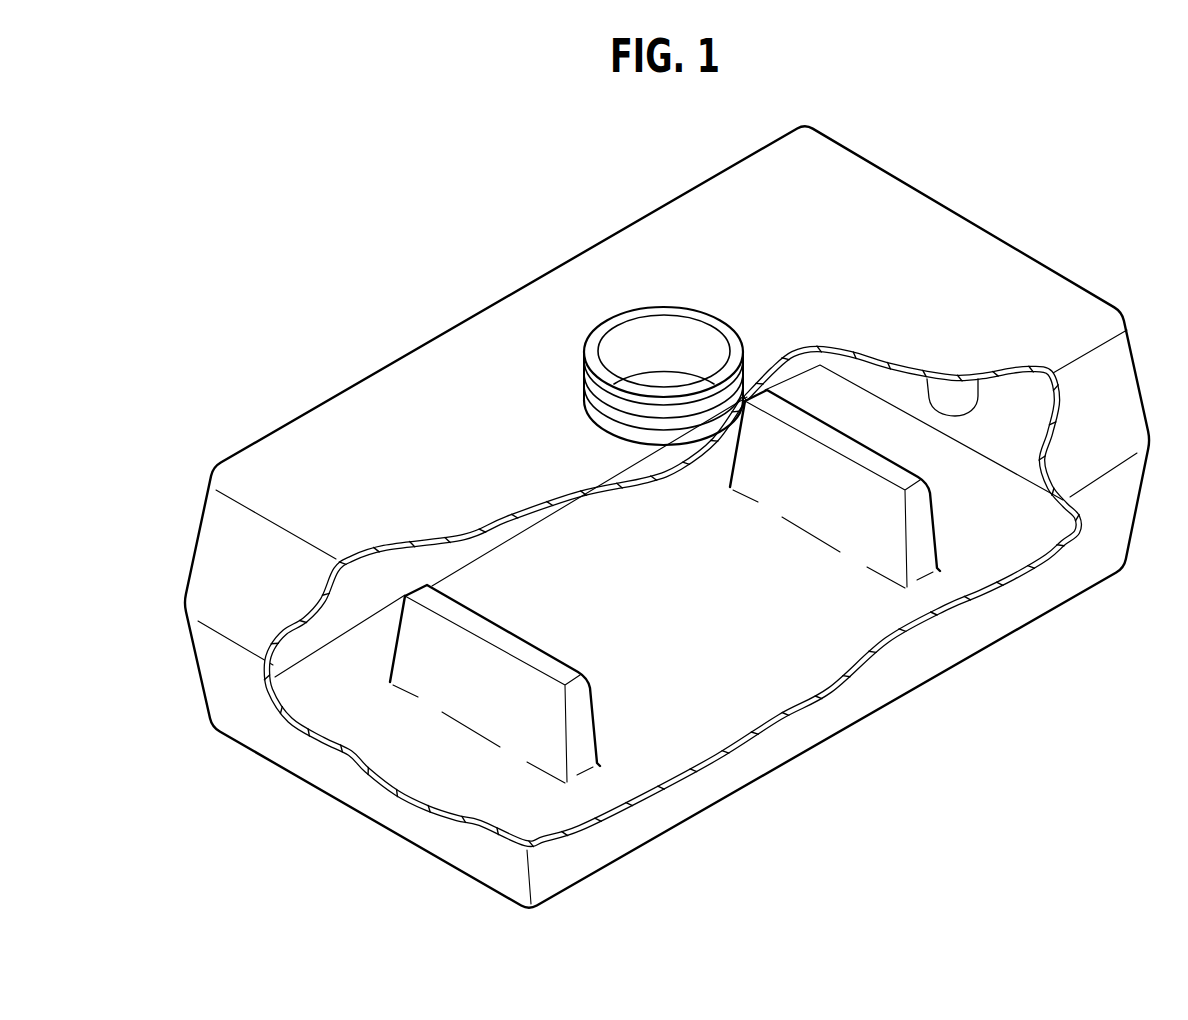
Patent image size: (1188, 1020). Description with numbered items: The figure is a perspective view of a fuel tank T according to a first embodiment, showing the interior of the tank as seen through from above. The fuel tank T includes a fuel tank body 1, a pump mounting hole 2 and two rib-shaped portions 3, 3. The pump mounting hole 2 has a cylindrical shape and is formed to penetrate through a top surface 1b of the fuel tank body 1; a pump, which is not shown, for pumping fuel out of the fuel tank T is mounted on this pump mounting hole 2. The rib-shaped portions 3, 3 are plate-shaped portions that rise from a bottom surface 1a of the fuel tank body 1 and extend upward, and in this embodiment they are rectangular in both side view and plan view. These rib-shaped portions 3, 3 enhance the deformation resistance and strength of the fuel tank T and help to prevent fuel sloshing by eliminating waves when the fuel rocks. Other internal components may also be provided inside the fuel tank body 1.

The fuel tank T is at (1057, 195).
The fuel tank body 1 is at (337, 447).
The bottom surface 1a is at (720, 656).
The top surface 1b is at (979, 380).
The pump mounting hole 2 is at (593, 347).
The rib-shaped portion 3 is at (582, 735).